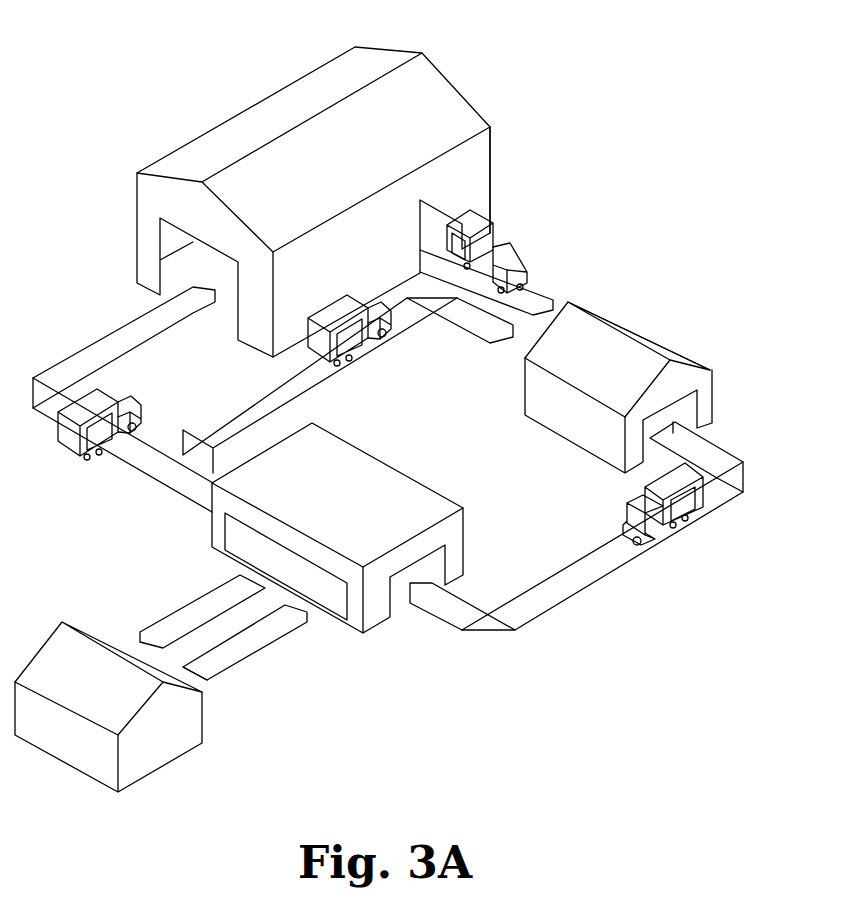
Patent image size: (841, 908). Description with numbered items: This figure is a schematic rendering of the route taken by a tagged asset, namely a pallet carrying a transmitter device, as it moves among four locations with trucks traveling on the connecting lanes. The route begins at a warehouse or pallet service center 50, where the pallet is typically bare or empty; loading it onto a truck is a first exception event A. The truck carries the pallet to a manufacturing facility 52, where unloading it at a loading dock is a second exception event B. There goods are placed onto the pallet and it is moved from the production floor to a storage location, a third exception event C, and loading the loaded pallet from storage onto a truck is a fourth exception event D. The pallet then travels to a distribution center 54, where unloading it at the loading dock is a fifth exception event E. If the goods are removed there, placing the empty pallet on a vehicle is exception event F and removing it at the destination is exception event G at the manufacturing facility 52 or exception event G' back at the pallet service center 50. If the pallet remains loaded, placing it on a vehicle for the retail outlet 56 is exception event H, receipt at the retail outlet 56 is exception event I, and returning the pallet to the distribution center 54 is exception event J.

The warehouse or pallet service center 50 is at (267, 86).
The manufacturing facility 52 is at (720, 381).
The distribution center 54 is at (474, 532).
The retail outlet 56 is at (183, 763).
The first exception event A is at (500, 180).
The second exception event B is at (496, 282).
The third exception event C is at (639, 336).
The fourth exception event D is at (602, 525).
The fifth exception event E is at (456, 610).
The exception event F is at (320, 385).
The exception event G is at (463, 337).
The exception event G' is at (124, 399).
The exception event H is at (202, 602).
The exception event I is at (201, 689).
The exception event J is at (251, 642).